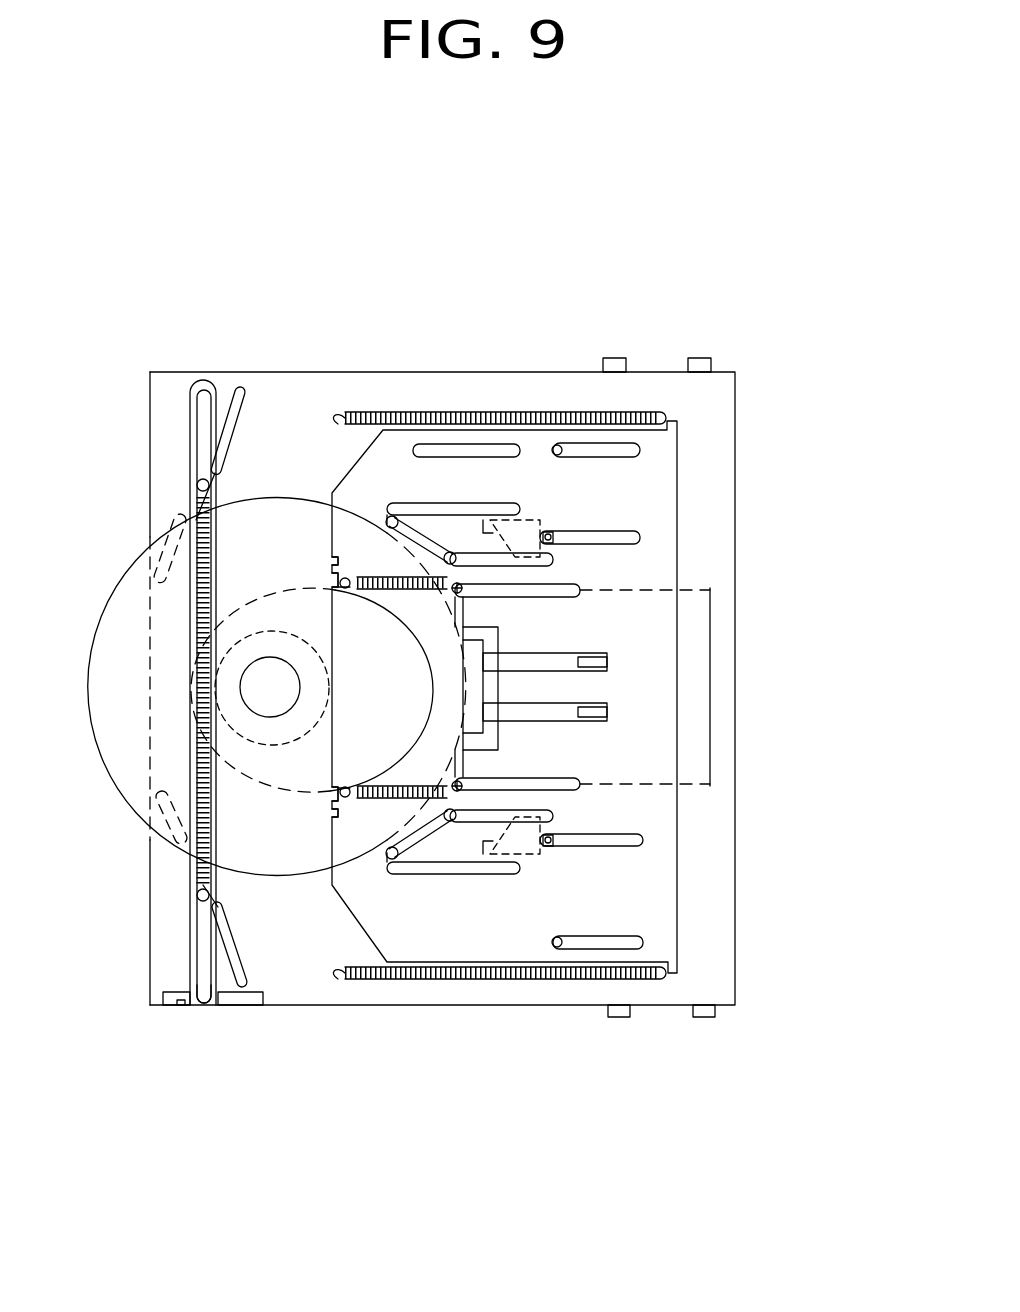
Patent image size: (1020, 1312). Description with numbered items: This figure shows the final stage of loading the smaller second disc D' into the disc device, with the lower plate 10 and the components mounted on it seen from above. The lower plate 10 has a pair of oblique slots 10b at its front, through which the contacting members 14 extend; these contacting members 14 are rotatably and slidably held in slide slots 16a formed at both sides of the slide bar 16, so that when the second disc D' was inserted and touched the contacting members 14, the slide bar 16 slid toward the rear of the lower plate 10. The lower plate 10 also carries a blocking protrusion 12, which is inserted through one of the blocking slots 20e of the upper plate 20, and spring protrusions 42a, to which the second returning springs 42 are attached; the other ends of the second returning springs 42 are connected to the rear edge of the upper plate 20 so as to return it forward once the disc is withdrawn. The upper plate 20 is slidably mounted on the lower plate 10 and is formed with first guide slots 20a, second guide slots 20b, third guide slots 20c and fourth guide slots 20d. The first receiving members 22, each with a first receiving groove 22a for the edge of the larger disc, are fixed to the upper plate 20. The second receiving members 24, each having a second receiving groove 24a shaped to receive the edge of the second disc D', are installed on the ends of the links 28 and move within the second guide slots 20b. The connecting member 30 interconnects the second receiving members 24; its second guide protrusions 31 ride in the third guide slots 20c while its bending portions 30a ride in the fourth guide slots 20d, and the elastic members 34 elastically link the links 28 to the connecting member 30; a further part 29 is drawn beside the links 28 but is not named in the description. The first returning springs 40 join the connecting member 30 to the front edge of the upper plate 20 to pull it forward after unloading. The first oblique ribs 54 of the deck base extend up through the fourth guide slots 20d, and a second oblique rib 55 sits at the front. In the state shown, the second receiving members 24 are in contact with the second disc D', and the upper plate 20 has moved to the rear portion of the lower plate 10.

The lower plate 10 is at (673, 1000).
The oblique slots 10b is at (235, 990).
The blocking protrusion 12 is at (557, 947).
The contacting members 14 is at (198, 895).
The slide bar 16 is at (190, 960).
The slide slots 16a is at (201, 1007).
The upper plate 20 is at (663, 883).
The first guide slots 20a is at (385, 500).
The second guide slots 20b is at (553, 552).
The third guide slots 20c is at (580, 590).
The fourth guide slots 20d is at (607, 722).
The blocking slots 20e is at (612, 944).
The first receiving members 22 is at (600, 447).
The first receiving groove 22a is at (483, 520).
The second receiving members 24 is at (400, 855).
The second receiving groove 24a is at (393, 860).
The links 28 is at (330, 493).
The spring 29 is at (452, 575).
The connecting member 30 is at (493, 688).
The bending portions 30a is at (500, 663).
The second guide protrusions 31 is at (452, 552).
The elastic members 34 is at (440, 520).
The first returning springs 40 is at (367, 577).
The second returning springs 42 is at (592, 424).
The spring protrusions 42a is at (333, 978).
The first oblique ribs 54 is at (607, 653).
The second oblique ribs 55 is at (180, 1003).
The second disc D' is at (262, 705).